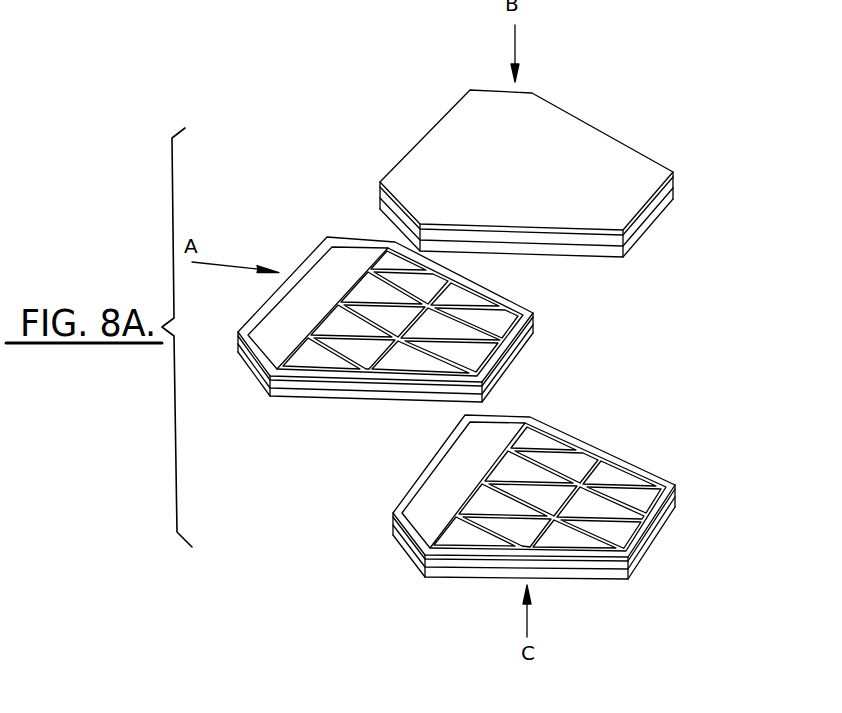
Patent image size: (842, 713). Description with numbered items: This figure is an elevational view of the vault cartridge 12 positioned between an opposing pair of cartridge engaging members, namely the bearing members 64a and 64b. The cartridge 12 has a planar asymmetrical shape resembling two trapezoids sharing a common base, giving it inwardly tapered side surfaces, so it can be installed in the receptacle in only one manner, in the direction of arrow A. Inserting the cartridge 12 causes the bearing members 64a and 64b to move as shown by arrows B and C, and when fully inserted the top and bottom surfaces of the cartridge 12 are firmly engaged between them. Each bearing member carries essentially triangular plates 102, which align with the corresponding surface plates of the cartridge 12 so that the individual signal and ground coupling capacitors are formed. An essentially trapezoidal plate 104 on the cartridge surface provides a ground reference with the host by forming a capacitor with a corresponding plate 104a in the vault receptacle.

The bearing member 64a is at (430, 130).
The cartridge 12 is at (307, 397).
The trapezoidal plate 104 is at (288, 318).
The bearing member 64b is at (460, 578).
The corresponding plate 104a is at (432, 499).
The plates 102 is at (565, 463).